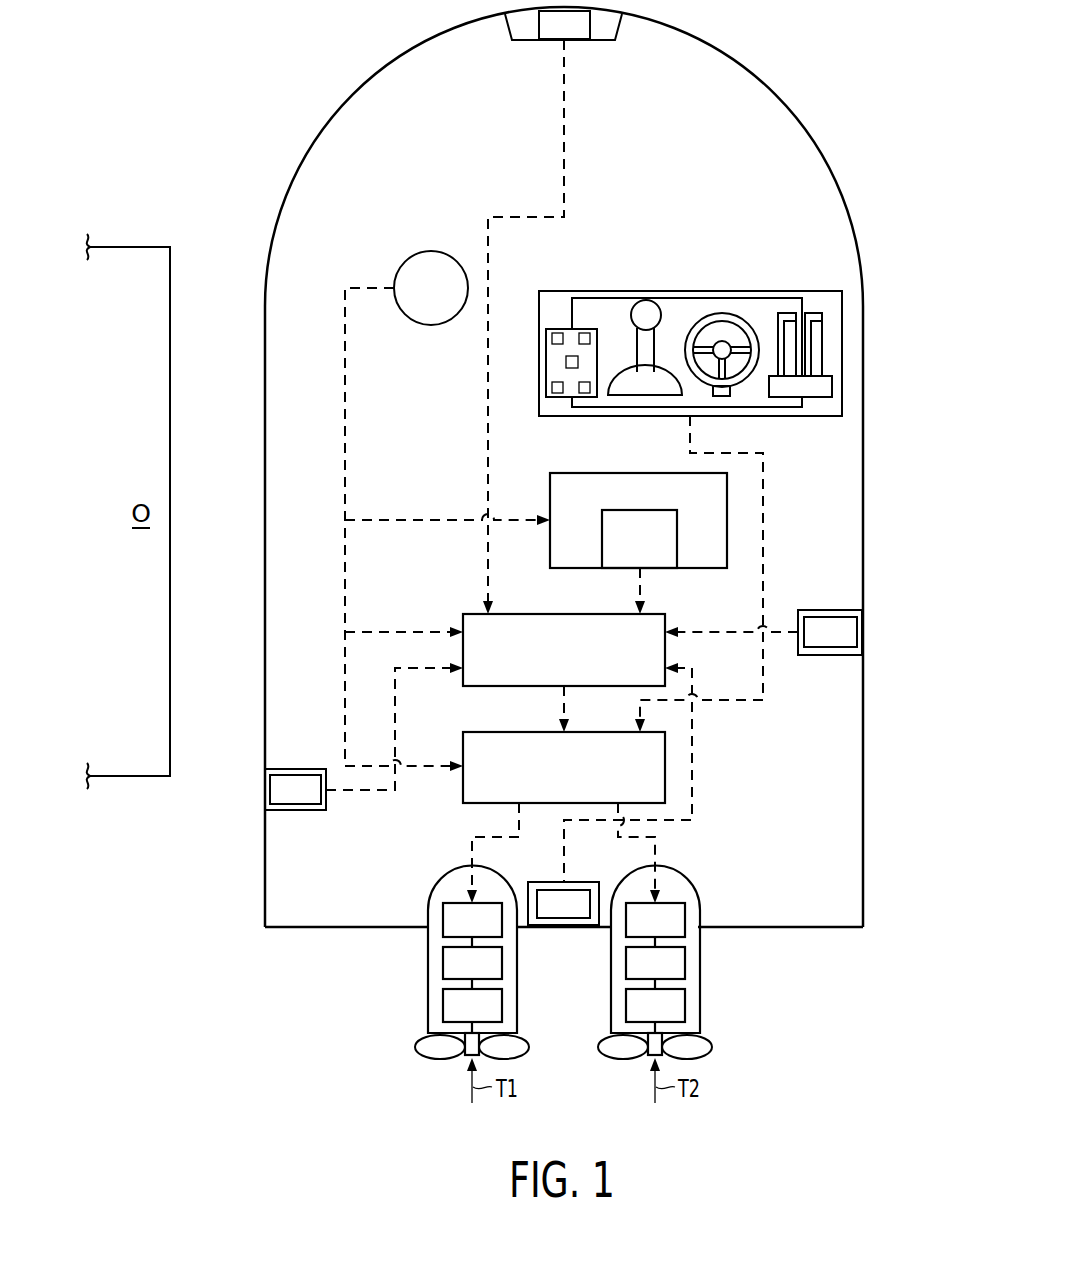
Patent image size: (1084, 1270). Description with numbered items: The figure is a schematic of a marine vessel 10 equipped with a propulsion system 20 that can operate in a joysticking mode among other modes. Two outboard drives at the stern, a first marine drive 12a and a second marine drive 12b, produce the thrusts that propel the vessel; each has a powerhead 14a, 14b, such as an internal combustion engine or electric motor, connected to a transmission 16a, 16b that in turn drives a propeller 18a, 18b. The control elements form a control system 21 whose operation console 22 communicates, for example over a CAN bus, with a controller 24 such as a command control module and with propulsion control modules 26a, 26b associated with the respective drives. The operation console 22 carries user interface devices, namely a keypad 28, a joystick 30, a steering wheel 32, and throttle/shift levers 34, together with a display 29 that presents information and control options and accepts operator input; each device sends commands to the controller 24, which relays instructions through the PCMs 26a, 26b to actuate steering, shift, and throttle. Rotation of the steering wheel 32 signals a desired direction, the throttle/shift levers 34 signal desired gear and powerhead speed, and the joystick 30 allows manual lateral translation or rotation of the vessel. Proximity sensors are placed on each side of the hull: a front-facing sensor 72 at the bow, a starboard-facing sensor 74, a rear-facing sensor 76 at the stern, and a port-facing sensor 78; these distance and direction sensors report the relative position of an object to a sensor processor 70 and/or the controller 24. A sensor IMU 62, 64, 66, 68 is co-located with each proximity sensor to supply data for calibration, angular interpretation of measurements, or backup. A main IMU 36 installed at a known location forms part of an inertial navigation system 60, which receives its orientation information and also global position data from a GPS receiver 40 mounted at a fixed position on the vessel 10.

The marine vessel 10 is at (843, 193).
The propulsion system 20 is at (746, 122).
The control system 21 is at (440, 428).
The operation console 22 is at (654, 291).
The display 29 is at (615, 330).
The keypad 28 is at (546, 362).
The joystick 30 is at (656, 352).
The steering wheel 32 is at (722, 313).
The throttle/shift levers 34 is at (788, 313).
The GPS receiver 40 is at (410, 256).
The inertial navigation system 60 is at (572, 473).
The main inertial measurement unit 36 is at (639, 510).
The sensor processor 70 is at (563, 614).
The controller 24 is at (665, 757).
The front-facing proximity sensor 72 is at (600, 28).
The sensor IMU 62 is at (576, 40).
The starboard-facing proximity sensor 74 is at (847, 610).
The sensor IMU 64 is at (818, 617).
The rear-facing proximity sensor 76 is at (563, 927).
The sensor IMU 66 is at (577, 890).
The port-facing proximity sensor 78 is at (278, 769).
The sensor IMU 68 is at (278, 810).
The first marine drive 12a is at (457, 878).
The second marine drive 12b is at (675, 878).
The propulsion control module 26a is at (455, 903).
The propulsion control module 26b is at (672, 903).
The powerhead 14a is at (443, 962).
The powerhead 14b is at (685, 962).
The transmission 16a is at (443, 1005).
The transmission 16b is at (685, 1004).
The propeller 18a is at (416, 1048).
The propeller 18b is at (718, 1047).